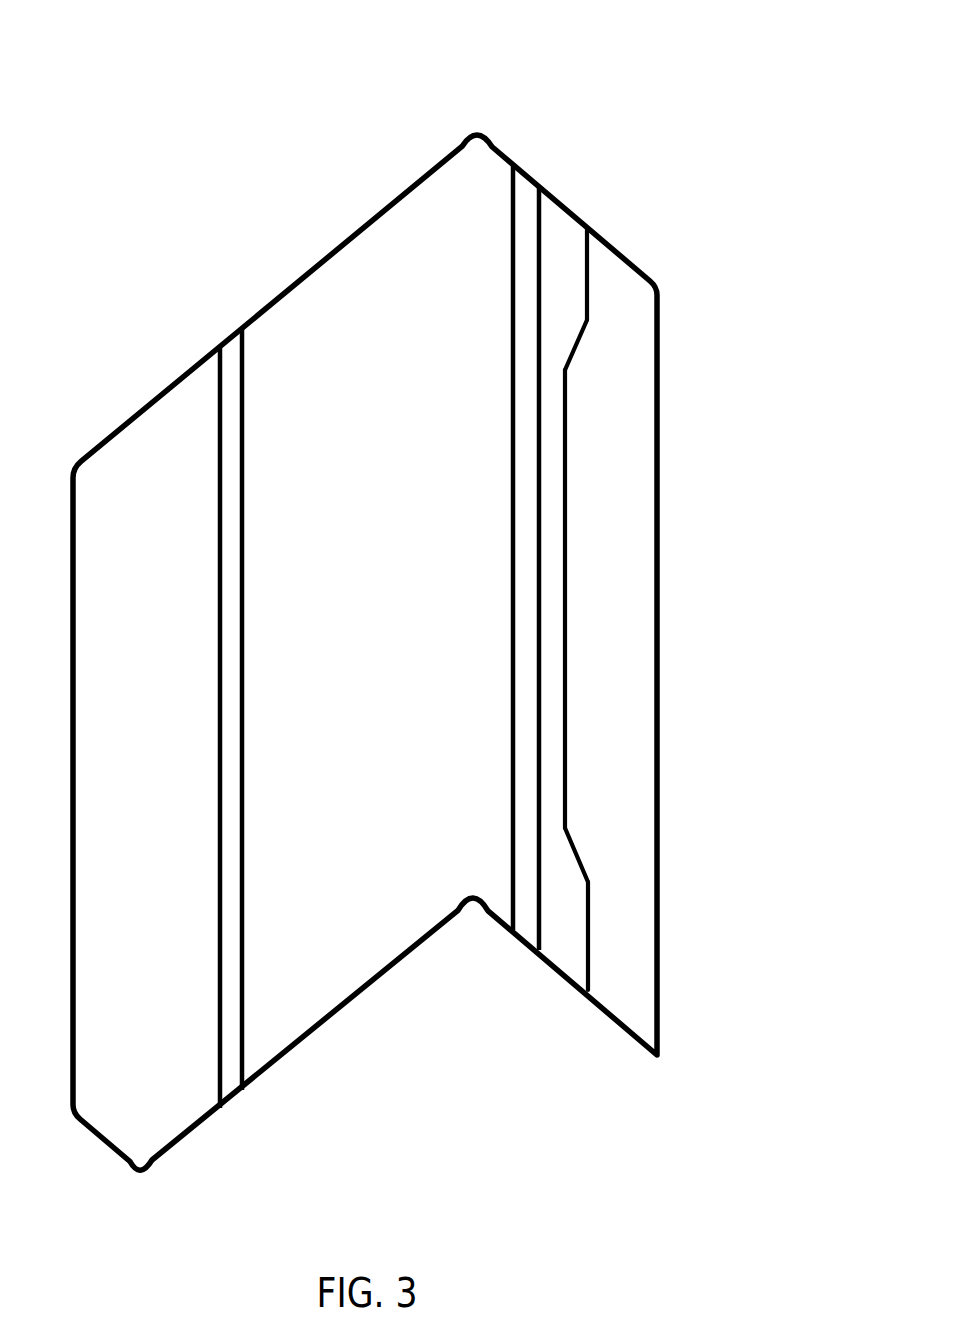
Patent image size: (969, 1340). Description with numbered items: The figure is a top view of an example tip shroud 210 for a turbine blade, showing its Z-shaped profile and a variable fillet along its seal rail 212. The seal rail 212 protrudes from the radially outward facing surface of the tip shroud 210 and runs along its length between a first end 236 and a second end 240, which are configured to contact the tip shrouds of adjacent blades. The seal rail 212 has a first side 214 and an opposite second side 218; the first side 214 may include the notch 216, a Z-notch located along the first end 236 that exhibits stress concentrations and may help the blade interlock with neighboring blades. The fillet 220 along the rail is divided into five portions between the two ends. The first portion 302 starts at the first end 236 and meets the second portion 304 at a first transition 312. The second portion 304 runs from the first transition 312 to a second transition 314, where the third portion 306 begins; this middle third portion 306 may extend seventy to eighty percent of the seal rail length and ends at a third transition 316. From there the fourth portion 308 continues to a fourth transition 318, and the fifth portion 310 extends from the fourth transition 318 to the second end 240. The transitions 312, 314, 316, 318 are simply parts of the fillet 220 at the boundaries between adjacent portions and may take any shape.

The tip shroud 210 is at (397, 148).
The seal rail 212 is at (537, 175).
The first side 214 is at (497, 168).
The notch 216 is at (473, 905).
The second side 218 is at (556, 226).
The fillet 220 is at (548, 690).
The first end 236 is at (517, 942).
The second end 240 is at (516, 140).
The first portion 302 is at (590, 975).
The second portion 304 is at (582, 860).
The third portion 306 is at (568, 763).
The fourth portion 308 is at (575, 357).
The fifth portion 310 is at (590, 245).
The first transition 312 is at (592, 880).
The second transition 314 is at (568, 832).
The third transition 316 is at (570, 375).
The fourth transition 318 is at (588, 327).